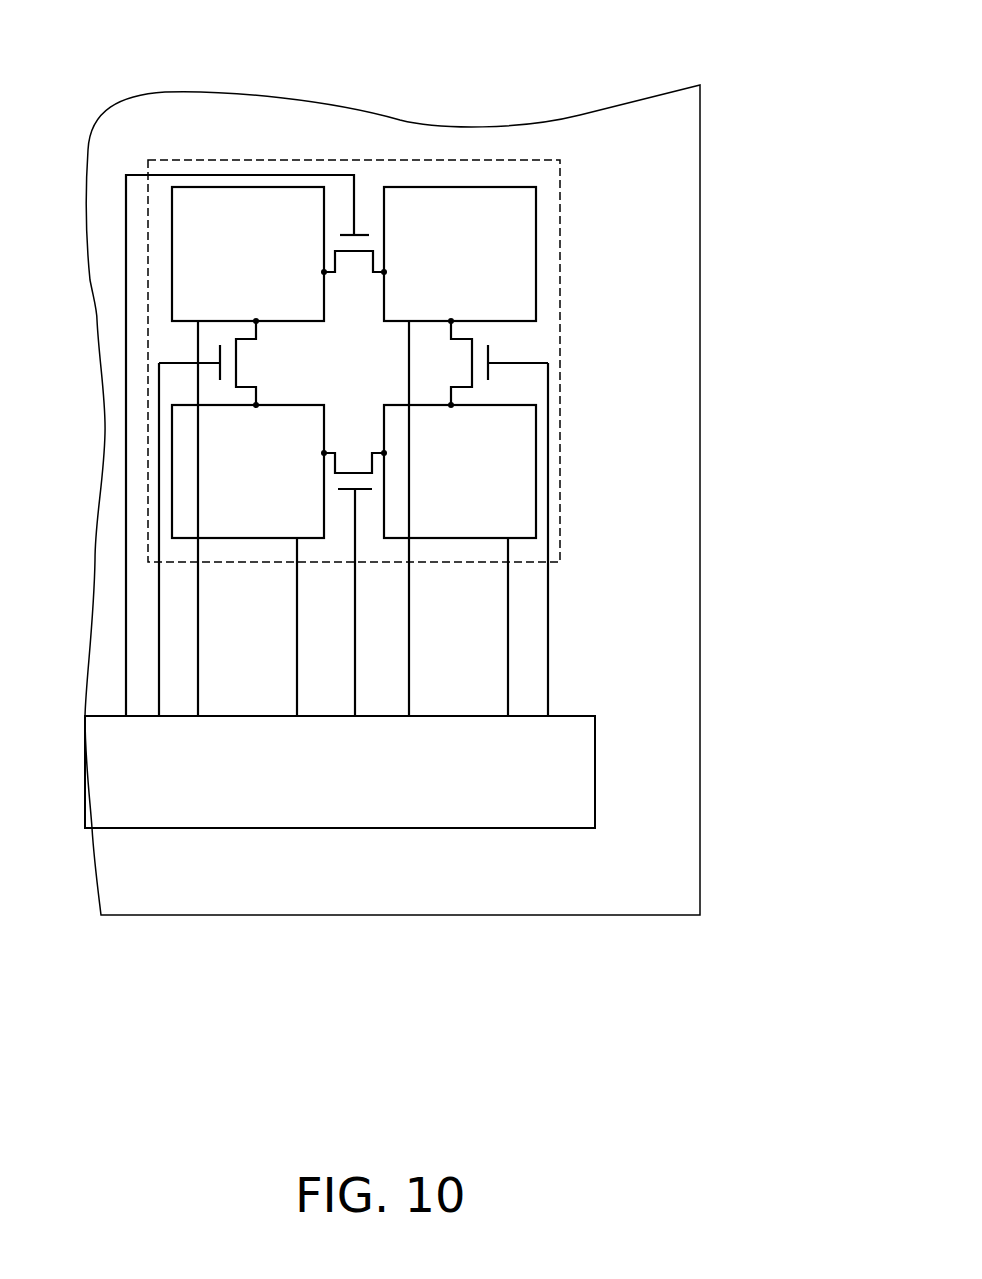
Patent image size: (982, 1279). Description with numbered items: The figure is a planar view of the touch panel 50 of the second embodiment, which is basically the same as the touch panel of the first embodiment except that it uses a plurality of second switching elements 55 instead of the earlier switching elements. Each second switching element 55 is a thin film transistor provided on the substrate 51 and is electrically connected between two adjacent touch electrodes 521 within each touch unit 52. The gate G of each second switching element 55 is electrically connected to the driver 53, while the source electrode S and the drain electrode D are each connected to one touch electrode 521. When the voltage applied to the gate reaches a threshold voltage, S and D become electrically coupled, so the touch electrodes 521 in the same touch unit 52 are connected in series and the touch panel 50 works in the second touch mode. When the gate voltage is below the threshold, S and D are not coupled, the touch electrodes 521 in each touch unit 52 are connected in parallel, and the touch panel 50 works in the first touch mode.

The touch panel 50 is at (437, 52).
The substrate 51 is at (700, 602).
The touch unit 52 is at (560, 242).
The touch electrode 521 is at (536, 289).
The driver 53 is at (595, 770).
The second switching element 55 is at (527, 347).